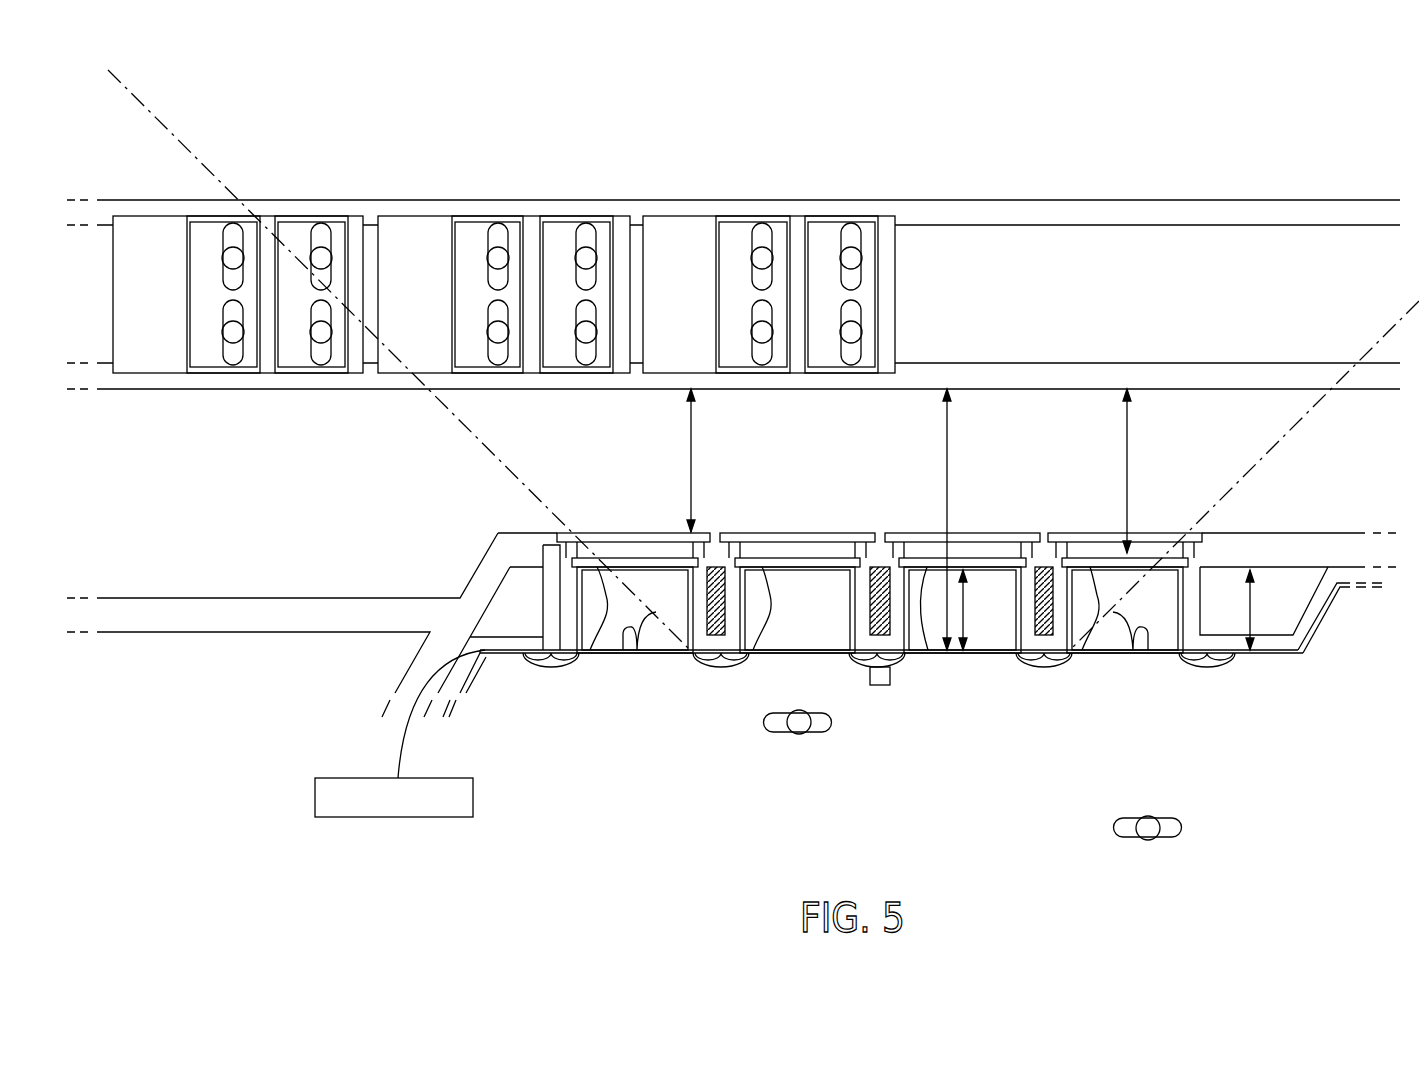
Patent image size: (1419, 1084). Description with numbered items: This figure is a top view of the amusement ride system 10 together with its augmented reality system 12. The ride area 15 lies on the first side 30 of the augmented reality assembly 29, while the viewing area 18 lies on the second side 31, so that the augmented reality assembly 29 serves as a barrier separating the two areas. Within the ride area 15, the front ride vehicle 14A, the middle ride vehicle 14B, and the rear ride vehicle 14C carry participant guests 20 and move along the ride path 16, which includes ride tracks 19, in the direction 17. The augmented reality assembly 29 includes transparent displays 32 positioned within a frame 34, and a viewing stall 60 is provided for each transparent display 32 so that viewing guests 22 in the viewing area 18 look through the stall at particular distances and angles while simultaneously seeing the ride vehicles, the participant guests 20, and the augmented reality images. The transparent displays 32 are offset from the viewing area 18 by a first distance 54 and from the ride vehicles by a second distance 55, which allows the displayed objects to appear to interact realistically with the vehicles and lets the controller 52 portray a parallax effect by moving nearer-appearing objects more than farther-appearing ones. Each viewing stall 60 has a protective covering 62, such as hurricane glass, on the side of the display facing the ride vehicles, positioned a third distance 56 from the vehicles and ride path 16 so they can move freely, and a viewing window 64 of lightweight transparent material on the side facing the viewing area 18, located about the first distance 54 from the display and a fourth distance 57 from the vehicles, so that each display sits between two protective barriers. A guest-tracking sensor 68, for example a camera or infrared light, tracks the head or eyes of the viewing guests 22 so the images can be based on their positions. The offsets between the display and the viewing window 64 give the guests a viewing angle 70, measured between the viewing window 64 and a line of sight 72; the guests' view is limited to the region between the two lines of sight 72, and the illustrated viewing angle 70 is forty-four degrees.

The amusement ride system 10 is at (272, 682).
The augmented reality system 12 is at (1286, 697).
The front ride vehicle 14A is at (157, 215).
The middle ride vehicle 14B is at (421, 215).
The rear ride vehicle 14C is at (687, 215).
The ride area 15 is at (786, 145).
The ride path 16 is at (1003, 187).
The direction 17 is at (105, 296).
The viewing area 18 is at (956, 845).
The ride tracks 19 is at (1047, 228).
The participant guests 20 is at (222, 258).
The viewing guests 22 is at (814, 732).
The augmented reality assembly 29 is at (663, 737).
The first side 30 is at (826, 145).
The second side 31 is at (993, 845).
The transparent displays 32 is at (590, 650).
The frame 34 is at (1322, 628).
The controller 52 is at (340, 778).
The first distance 54 is at (966, 628).
The second distance 55 is at (1128, 473).
The third distance 56 is at (692, 462).
The fourth distance 57 is at (948, 462).
The viewing stall 60 is at (543, 550).
The protective covering 62 is at (634, 533).
The viewing window 64 is at (652, 657).
The guest-tracking sensor 68 is at (883, 687).
The viewing angle 70 is at (623, 650).
The line of sight 72 is at (521, 483).